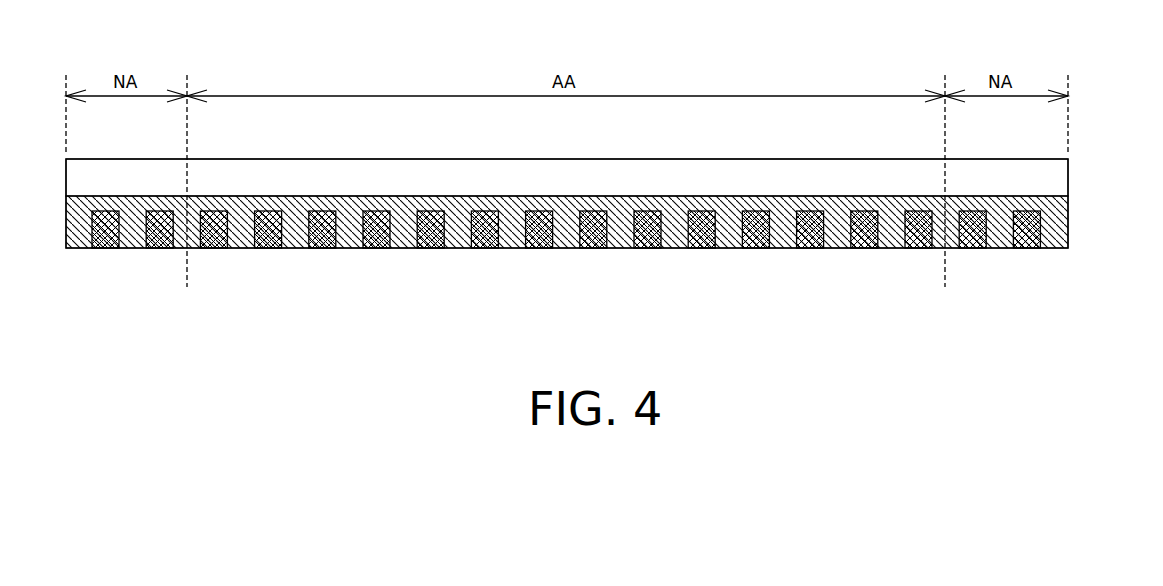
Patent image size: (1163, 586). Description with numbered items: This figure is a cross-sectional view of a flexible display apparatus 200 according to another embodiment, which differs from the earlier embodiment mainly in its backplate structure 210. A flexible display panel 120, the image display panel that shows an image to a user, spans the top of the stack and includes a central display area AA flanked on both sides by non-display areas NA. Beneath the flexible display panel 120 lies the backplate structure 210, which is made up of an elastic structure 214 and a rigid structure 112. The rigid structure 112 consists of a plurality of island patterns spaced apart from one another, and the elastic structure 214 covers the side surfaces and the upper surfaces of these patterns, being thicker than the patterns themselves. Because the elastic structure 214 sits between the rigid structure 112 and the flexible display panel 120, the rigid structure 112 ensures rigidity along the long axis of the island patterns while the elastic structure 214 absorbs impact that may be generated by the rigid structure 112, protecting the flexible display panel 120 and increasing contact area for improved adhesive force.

The flexible display apparatus 200 is at (1063, 32).
The flexible display panel 120 is at (1069, 180).
The backplate structure 210 is at (1069, 228).
The rigid structure 112 is at (812, 233).
The elastic structure 214 is at (1054, 236).